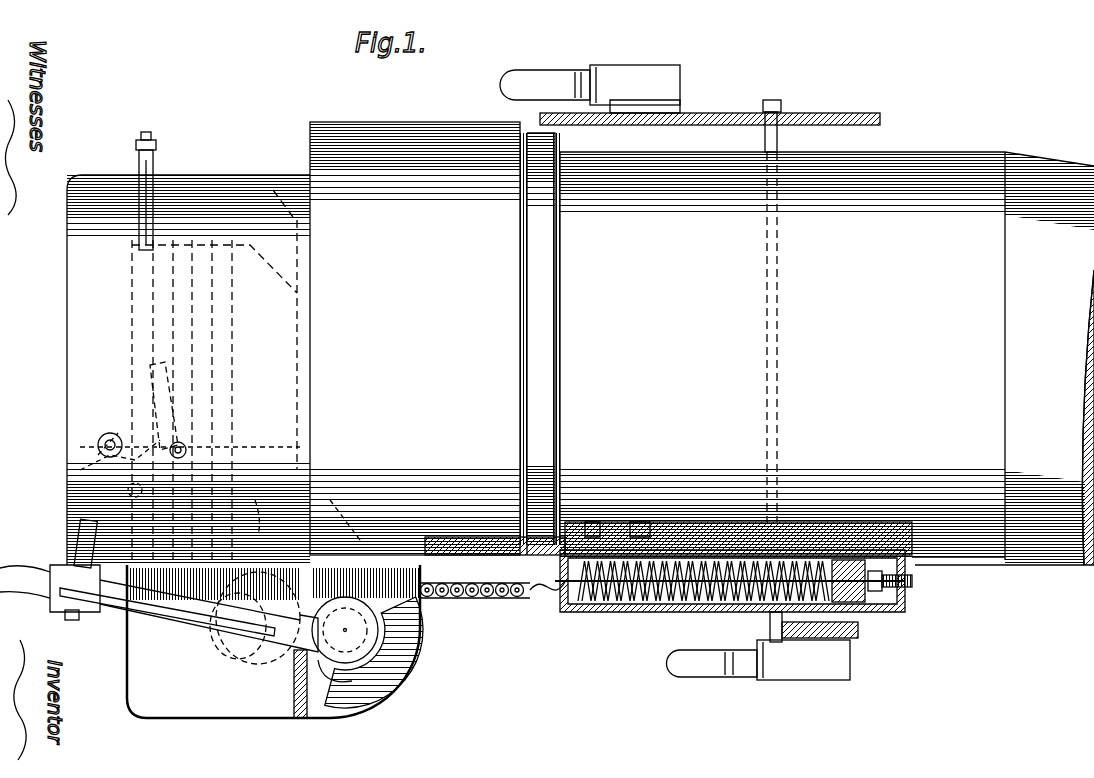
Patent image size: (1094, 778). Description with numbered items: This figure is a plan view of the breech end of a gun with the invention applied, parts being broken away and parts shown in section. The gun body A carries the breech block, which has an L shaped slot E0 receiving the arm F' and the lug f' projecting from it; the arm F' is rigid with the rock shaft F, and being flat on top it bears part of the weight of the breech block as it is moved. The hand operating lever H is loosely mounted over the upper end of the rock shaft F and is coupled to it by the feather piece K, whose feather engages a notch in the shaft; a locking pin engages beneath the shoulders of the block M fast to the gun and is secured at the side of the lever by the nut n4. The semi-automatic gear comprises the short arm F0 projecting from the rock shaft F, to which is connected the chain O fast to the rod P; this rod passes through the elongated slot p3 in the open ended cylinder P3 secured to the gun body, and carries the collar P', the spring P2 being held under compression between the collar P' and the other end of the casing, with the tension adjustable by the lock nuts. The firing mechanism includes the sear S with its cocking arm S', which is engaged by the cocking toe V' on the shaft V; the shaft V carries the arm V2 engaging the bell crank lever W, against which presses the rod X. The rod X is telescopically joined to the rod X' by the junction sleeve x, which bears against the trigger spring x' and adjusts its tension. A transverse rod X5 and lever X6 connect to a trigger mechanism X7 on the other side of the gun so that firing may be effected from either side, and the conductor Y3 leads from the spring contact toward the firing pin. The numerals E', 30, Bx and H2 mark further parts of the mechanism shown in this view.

The gun body A is at (827, 358).
The L shaped slot E0 is at (188, 370).
The lower housing E' is at (273, 641).
The rod X is at (437, 338).
The rod X' is at (738, 493).
The trigger spring x' is at (605, 484).
The junction sleeve x is at (647, 486).
The transverse rod X5 is at (778, 137).
The lever X6 is at (705, 114).
The trigger mechanism X7 is at (540, 78).
The plate Bx is at (872, 121).
The conductor Y3 is at (156, 173).
The sear S is at (136, 398).
The cocking arm S' is at (157, 435).
The pivot pin 30 is at (190, 441).
The shaft V is at (76, 433).
The cocking toe V' is at (102, 429).
The arm V2 is at (90, 458).
The bell crank lever W is at (126, 490).
The block M is at (77, 548).
The lug f' is at (269, 497).
The arm F' is at (365, 477).
The rock shaft F is at (387, 652).
The short arm F0 is at (432, 636).
The lever H is at (164, 626).
The hub H2 is at (384, 700).
The feather piece K is at (140, 616).
The nut n4 is at (74, 620).
The chain O is at (487, 599).
The elongated slot p3 is at (560, 584).
The rod P is at (753, 600).
The spring P2 is at (640, 612).
The open ended cylinder P3 is at (688, 612).
The collar P' is at (874, 602).